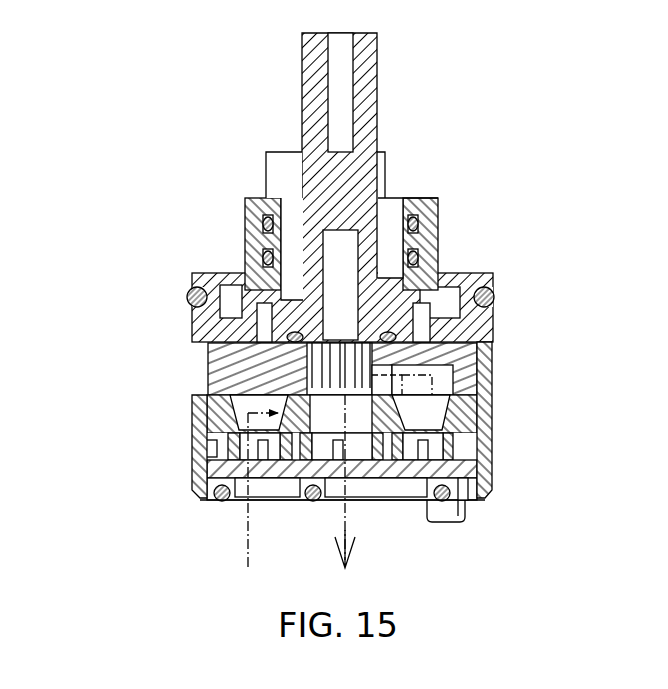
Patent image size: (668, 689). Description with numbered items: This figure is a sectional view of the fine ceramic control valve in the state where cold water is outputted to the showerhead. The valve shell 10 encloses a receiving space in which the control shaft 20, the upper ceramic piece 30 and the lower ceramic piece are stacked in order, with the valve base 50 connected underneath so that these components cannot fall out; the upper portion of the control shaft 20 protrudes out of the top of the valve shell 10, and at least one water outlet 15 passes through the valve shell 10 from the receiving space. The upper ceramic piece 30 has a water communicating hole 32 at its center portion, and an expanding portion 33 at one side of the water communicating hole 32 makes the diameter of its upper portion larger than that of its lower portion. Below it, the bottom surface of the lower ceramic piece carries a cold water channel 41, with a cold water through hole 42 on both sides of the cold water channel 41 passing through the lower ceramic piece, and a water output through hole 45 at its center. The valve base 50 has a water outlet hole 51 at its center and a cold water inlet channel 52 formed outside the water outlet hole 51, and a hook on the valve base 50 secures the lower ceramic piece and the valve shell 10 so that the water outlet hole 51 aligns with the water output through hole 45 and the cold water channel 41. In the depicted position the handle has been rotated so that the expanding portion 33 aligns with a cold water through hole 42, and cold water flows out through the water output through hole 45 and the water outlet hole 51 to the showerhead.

The valve shell 10 is at (237, 207).
The water outlet 15 is at (200, 365).
The control shaft 20 is at (384, 96).
The upper ceramic piece 30 is at (192, 318).
The water communicating hole 32 is at (367, 327).
The expanding portion 33 is at (445, 373).
The cold water channel 41 is at (440, 410).
The cold water through hole 42 is at (193, 448).
The water output through hole 45 is at (307, 485).
The valve base 50 is at (501, 499).
The water outlet hole 51 is at (357, 467).
The cold water inlet channel 52 is at (214, 497).